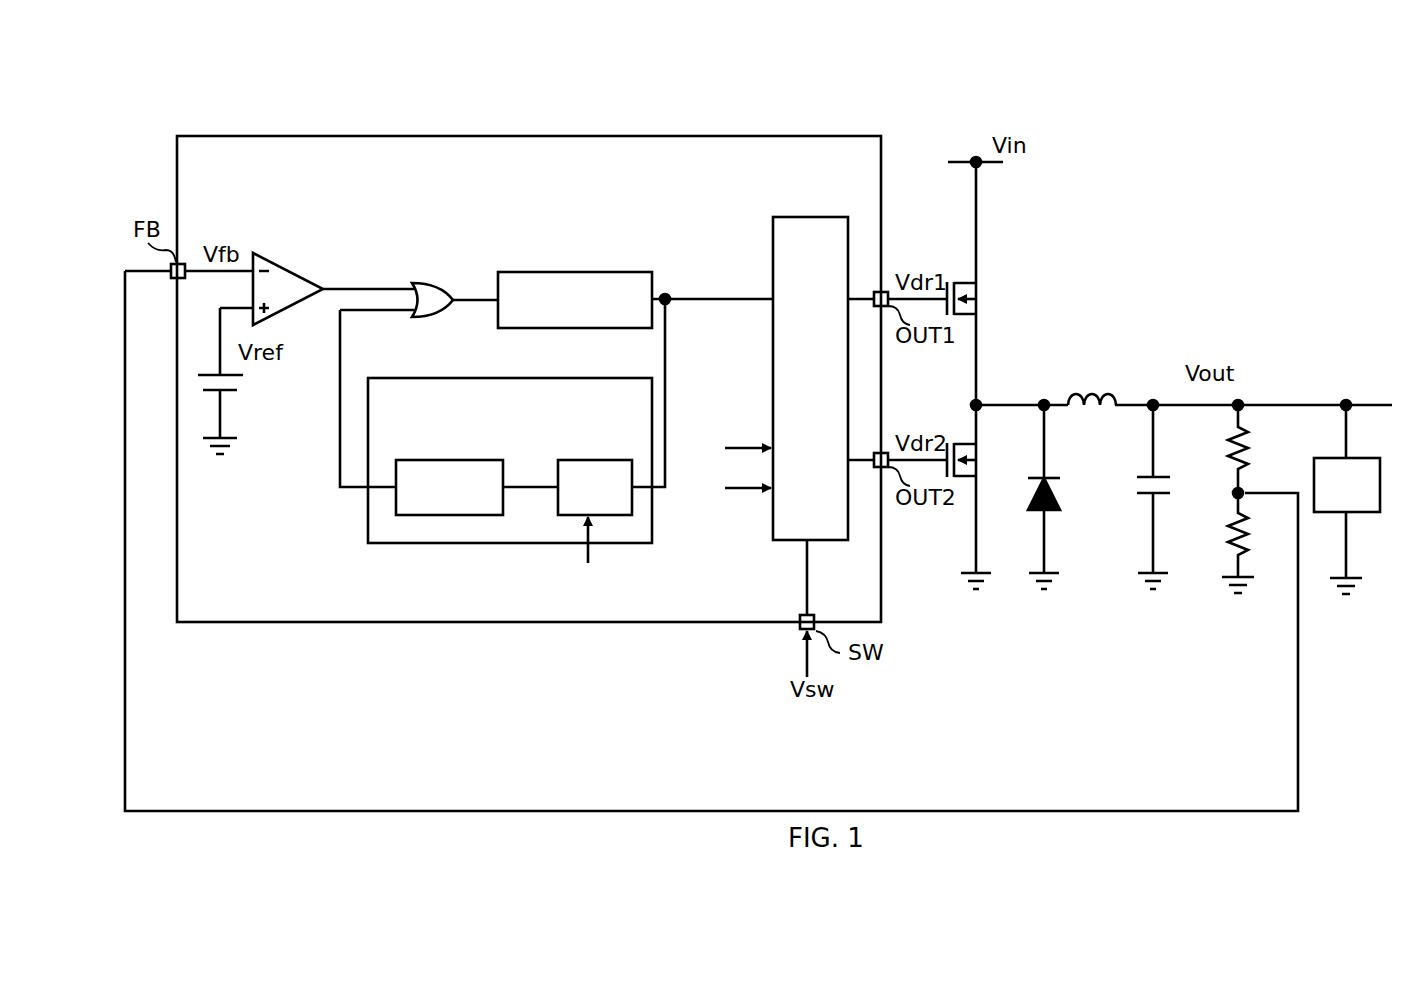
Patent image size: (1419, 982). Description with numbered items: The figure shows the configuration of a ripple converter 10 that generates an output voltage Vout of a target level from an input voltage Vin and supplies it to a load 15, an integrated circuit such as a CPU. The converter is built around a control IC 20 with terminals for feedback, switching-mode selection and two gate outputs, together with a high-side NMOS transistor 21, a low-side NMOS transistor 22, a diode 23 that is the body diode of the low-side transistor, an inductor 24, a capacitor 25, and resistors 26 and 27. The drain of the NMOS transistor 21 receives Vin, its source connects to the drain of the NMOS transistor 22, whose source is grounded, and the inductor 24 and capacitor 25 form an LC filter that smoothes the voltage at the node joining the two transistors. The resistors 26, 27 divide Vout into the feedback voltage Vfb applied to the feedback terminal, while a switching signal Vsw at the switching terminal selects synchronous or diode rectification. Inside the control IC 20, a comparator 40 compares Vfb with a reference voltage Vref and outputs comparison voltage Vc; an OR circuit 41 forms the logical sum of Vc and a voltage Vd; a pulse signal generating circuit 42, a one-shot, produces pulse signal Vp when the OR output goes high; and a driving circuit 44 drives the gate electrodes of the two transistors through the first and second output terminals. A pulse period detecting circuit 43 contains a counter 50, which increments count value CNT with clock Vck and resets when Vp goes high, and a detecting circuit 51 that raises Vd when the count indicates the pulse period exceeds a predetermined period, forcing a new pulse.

The ripple converter 10 is at (1092, 102).
The load 15 is at (1360, 458).
The control IC 20 is at (210, 136).
The NMOS transistor 21 is at (968, 300).
The NMOS transistor 22 is at (980, 466).
The diode 23 is at (1062, 500).
The inductor 24 is at (1105, 392).
The capacitor 25 is at (1168, 476).
The resistor 26 is at (1248, 450).
The resistor 27 is at (1232, 548).
The comparator 40 is at (276, 262).
The OR circuit 41 is at (437, 286).
The pulse signal generating circuit 42 is at (502, 272).
The pulse period detecting circuit 43 is at (392, 378).
The driving circuit 44 is at (776, 217).
The counter 50 is at (564, 460).
The detecting circuit 51 is at (402, 460).